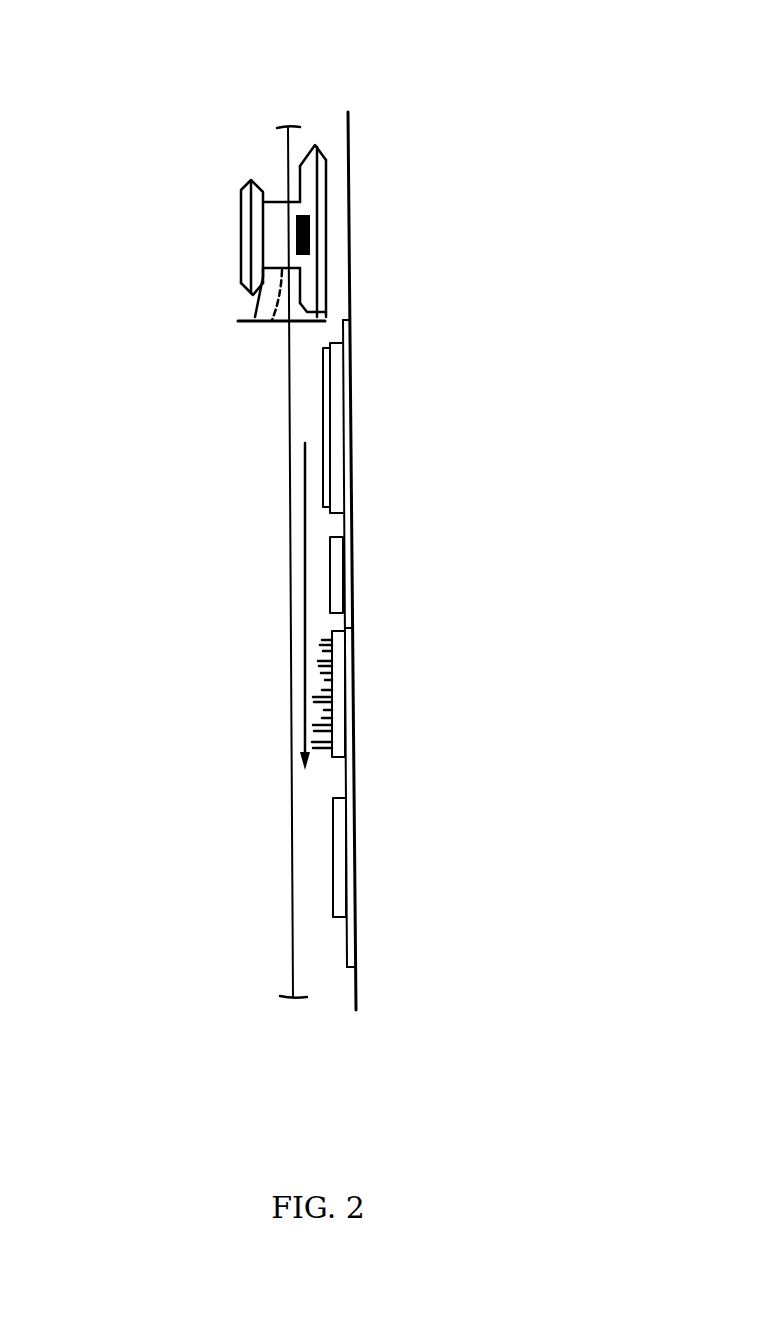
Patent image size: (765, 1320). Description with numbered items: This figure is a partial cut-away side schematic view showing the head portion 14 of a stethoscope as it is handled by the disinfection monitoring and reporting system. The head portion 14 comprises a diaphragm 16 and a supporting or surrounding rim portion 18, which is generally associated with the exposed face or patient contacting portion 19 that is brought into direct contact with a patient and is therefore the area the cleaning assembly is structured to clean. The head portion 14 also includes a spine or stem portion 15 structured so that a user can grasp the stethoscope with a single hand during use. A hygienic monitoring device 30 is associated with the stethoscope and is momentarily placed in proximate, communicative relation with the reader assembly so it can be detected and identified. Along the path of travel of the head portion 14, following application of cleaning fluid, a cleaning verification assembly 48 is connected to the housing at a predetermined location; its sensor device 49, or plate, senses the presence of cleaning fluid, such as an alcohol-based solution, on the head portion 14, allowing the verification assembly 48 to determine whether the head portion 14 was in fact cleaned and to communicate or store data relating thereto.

The head portion 14 is at (247, 158).
The spine or stem portion 15 is at (240, 232).
The diaphragm 16 is at (328, 215).
The rim portion 18 is at (318, 147).
The patient contacting portion 19 is at (322, 291).
The hygienic monitoring device 30 is at (295, 238).
The cleaning verification assembly 48 is at (317, 575).
The sensor device 49 is at (337, 551).